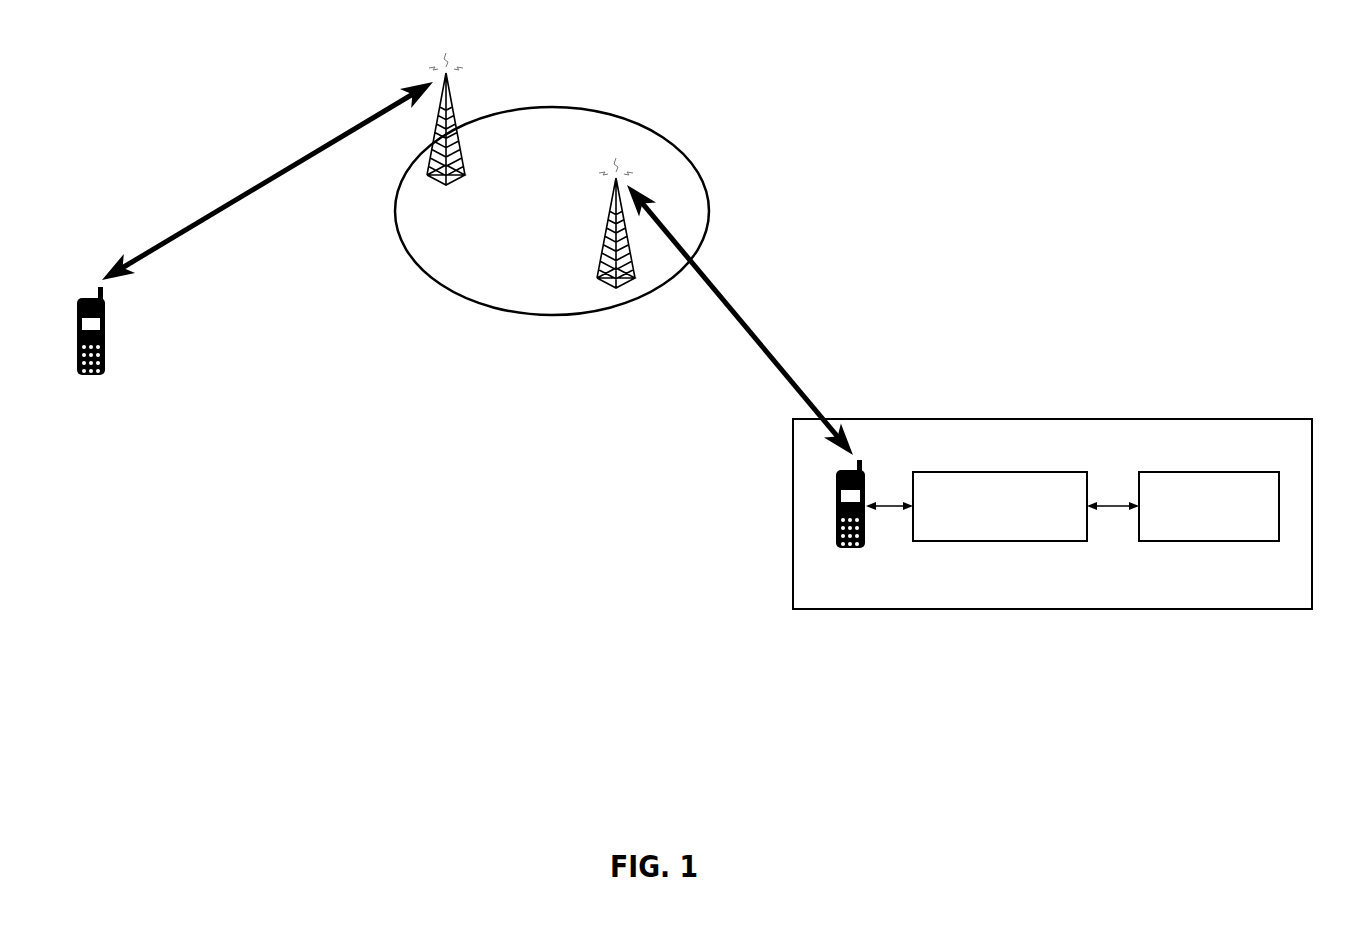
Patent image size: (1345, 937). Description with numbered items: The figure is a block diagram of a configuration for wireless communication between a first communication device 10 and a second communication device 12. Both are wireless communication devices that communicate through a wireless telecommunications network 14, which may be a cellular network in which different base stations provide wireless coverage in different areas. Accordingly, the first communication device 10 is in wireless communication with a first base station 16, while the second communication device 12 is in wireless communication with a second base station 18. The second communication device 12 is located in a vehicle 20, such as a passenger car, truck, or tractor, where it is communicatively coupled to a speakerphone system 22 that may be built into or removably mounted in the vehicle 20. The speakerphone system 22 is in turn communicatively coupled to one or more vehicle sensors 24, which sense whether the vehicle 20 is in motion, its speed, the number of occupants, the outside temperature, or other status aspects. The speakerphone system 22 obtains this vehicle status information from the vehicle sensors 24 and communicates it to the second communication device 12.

The first communication device 10 is at (107, 350).
The second communication device 12 is at (848, 549).
The wireless telecommunications network 14 is at (550, 105).
The first base station 16 is at (447, 187).
The second base station 18 is at (616, 290).
The vehicle 20 is at (1002, 419).
The speakerphone system 22 is at (1000, 542).
The vehicle sensor(s) 24 is at (1207, 542).